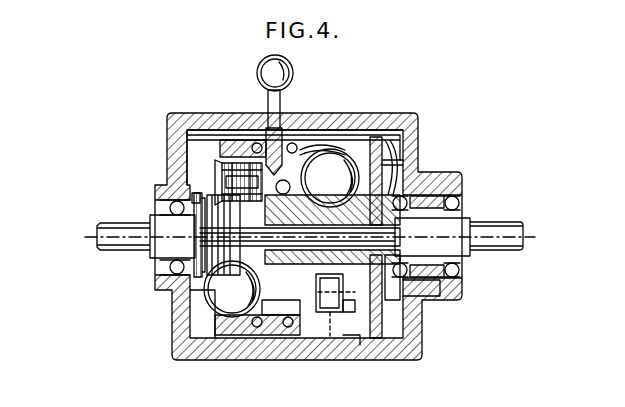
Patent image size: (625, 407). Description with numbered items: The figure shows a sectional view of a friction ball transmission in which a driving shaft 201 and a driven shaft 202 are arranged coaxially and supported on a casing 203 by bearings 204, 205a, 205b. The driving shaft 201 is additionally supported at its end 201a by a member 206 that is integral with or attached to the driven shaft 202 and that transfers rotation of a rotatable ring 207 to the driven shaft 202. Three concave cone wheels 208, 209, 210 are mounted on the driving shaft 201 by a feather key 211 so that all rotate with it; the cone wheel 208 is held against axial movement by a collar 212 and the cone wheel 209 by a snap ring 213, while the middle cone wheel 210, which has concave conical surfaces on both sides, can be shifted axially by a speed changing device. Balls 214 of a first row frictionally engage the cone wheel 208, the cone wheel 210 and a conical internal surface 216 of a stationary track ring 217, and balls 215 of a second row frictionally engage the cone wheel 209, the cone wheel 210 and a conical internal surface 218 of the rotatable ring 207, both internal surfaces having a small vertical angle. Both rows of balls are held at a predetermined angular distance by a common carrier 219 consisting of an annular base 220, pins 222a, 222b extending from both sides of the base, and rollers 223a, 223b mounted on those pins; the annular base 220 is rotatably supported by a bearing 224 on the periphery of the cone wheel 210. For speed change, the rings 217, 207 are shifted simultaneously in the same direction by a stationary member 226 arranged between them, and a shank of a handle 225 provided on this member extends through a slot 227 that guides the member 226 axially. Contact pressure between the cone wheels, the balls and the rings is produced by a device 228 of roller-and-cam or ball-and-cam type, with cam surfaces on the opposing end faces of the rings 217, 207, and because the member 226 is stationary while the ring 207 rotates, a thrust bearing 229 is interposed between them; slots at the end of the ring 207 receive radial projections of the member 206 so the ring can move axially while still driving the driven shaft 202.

The driving shaft 201 is at (96, 236).
The end of driving shaft 201a is at (415, 286).
The driven shaft 202 is at (500, 228).
The casing 203 is at (418, 126).
The bearing 204 is at (160, 212).
The bearing 205a is at (404, 195).
The bearing 205b is at (462, 192).
The member 206 is at (382, 162).
The rotatable ring 207 is at (373, 150).
The concave cone wheel 208 is at (193, 198).
The concave cone wheel 209 is at (389, 172).
The middle concave cone wheel 210 is at (262, 200).
The feather key 211 is at (343, 288).
The collar 212 is at (198, 242).
The snap ring 213 is at (380, 284).
The balls of first row 214 is at (234, 288).
The balls of second row 215 is at (330, 188).
The conical internal surface 216 is at (250, 158).
The track ring 217 is at (234, 140).
The conical internal surface 218 is at (314, 154).
The carrier 219 is at (283, 305).
The annular base 220 is at (333, 325).
The pin 222a is at (232, 166).
The pin 222b is at (358, 346).
The roller 223a is at (227, 182).
The roller 223b is at (345, 312).
The bearing 224 is at (256, 328).
The handle 225 is at (273, 103).
The member 226 is at (268, 120).
The slot 227 is at (290, 126).
The contact pressure generating device 228 is at (247, 338).
The thrust bearing 229 is at (288, 328).